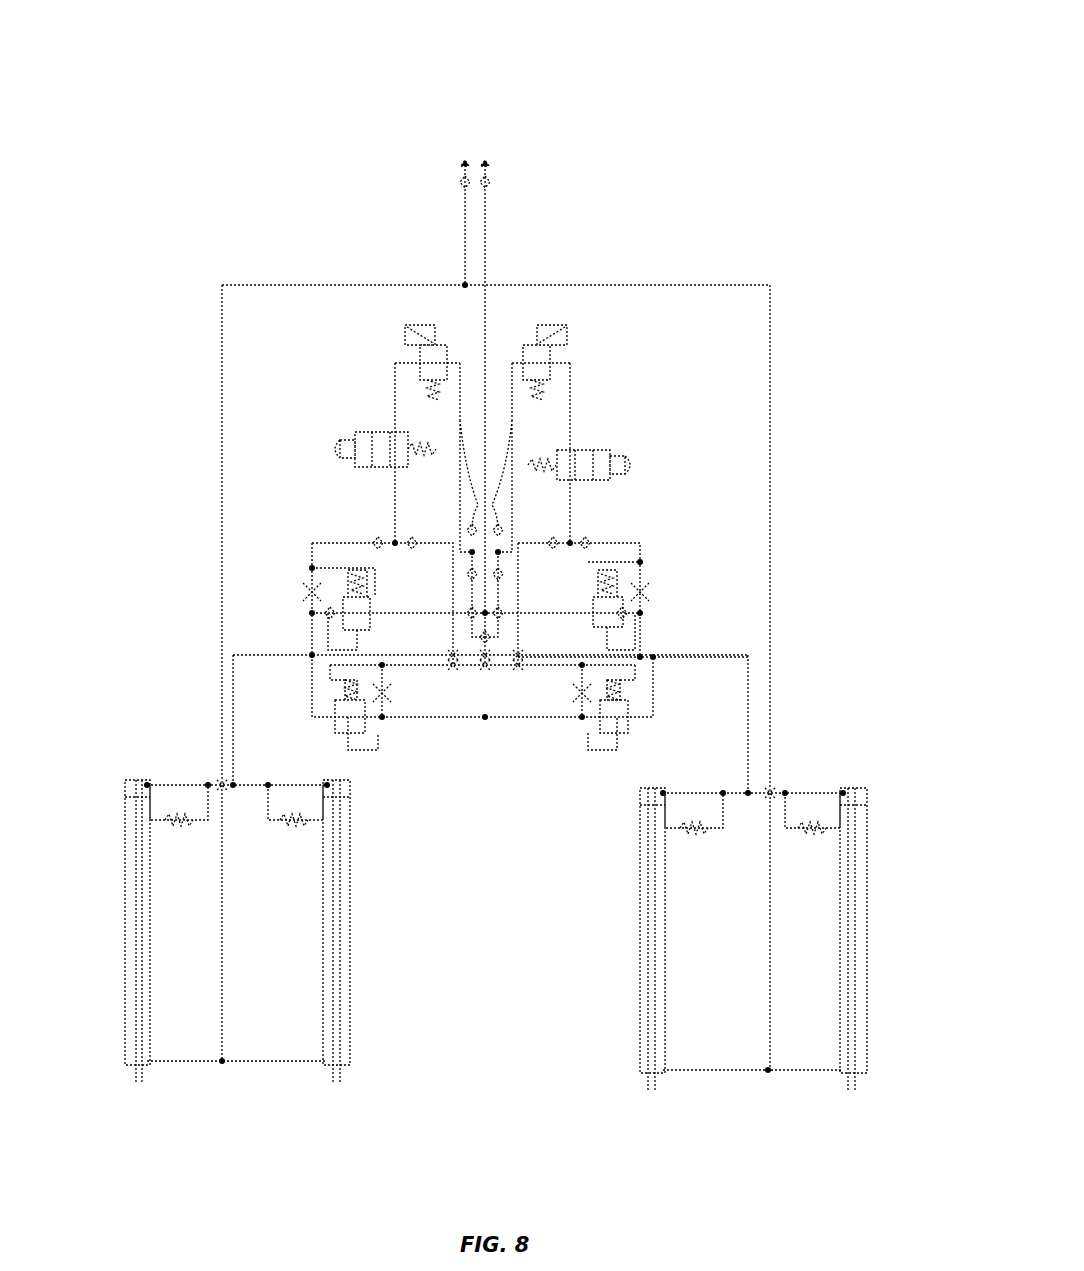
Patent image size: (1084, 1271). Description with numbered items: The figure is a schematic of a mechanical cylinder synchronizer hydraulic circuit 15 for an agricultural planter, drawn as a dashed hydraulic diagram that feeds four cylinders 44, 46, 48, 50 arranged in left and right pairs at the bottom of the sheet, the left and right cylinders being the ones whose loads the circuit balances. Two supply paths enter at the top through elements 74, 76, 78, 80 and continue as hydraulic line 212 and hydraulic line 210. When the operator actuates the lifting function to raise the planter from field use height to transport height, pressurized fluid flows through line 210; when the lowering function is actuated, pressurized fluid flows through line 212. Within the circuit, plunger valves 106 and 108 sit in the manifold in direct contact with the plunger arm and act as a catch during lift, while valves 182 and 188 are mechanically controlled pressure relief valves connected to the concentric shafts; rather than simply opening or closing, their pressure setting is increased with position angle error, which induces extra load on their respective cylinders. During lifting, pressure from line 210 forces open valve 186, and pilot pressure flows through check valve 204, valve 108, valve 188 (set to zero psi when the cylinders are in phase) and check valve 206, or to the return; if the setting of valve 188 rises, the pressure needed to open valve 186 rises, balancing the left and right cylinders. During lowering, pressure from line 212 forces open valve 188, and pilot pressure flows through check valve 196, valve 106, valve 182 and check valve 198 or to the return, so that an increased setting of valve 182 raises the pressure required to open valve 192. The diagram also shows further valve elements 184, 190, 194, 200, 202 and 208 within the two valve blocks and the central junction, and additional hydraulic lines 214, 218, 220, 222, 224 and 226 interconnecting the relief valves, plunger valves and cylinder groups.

The mechanical cylinder synchronizer hydraulic circuit 15 is at (496, 76).
The first hydraulic cylinder 44 is at (150, 952).
The second hydraulic cylinder 46 is at (350, 990).
The third hydraulic cylinder 48 is at (665, 985).
The fourth hydraulic cylinder 50 is at (840, 970).
The supply port 74 is at (463, 160).
The return port 76 is at (487, 160).
The check valve 78 is at (461, 180).
The check valve 80 is at (490, 180).
The plunger valve 106 is at (355, 440).
The plunger valve 108 is at (610, 458).
The mechanically controlled pressure relief valve 182 is at (440, 345).
The pressure reducing valve 184 is at (360, 630).
The valve 186 is at (350, 733).
The mechanically controlled pressure relief valve 188 is at (535, 345).
The pressure reducing valve 190 is at (616, 630).
The valve 192 is at (617, 733).
The check valve 194 is at (375, 545).
The check valve 196 is at (414, 542).
The check valve 198 is at (462, 440).
The check valve 200 is at (472, 582).
The check valve 202 is at (588, 542).
The check valve 204 is at (552, 542).
The check valve 206 is at (508, 440).
The check valve 208 is at (500, 582).
The hydraulic line 210 is at (488, 226).
The hydraulic line 212 is at (464, 226).
The hydraulic line 214 is at (192, 783).
The hydraulic line 218 is at (395, 505).
The hydraulic line 220 is at (395, 378).
The hydraulic line 222 is at (460, 363).
The hydraulic line 224 is at (512, 363).
The hydraulic line 226 is at (570, 380).